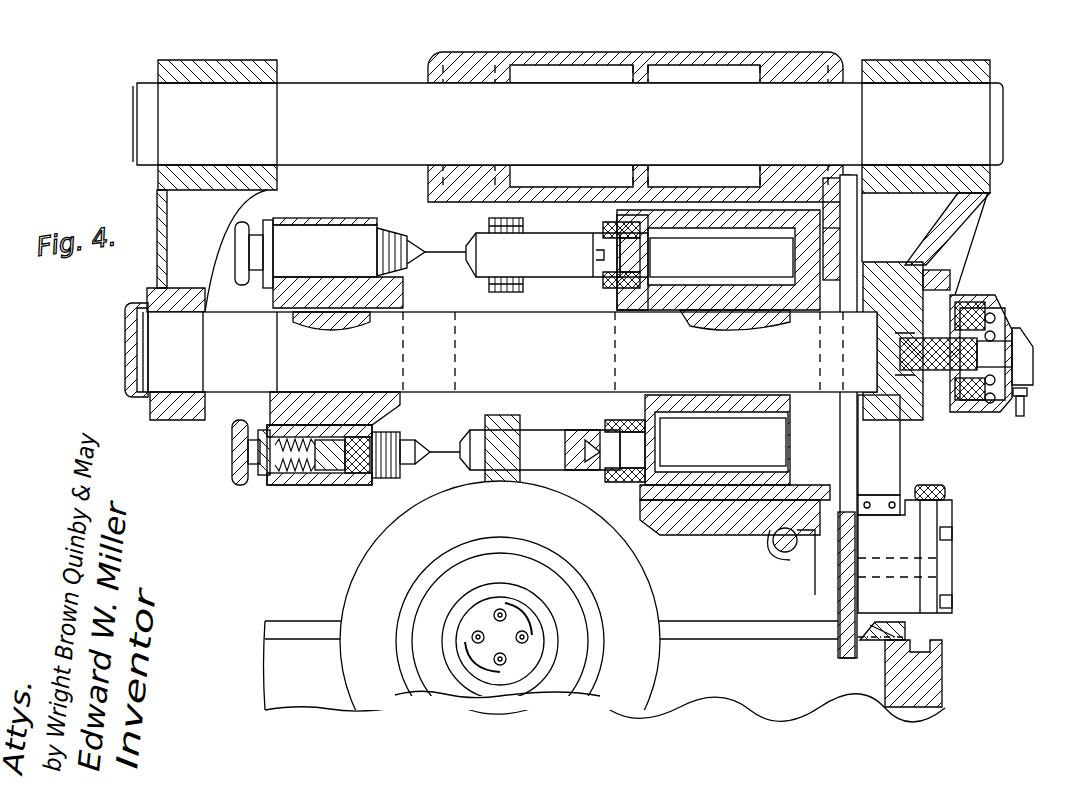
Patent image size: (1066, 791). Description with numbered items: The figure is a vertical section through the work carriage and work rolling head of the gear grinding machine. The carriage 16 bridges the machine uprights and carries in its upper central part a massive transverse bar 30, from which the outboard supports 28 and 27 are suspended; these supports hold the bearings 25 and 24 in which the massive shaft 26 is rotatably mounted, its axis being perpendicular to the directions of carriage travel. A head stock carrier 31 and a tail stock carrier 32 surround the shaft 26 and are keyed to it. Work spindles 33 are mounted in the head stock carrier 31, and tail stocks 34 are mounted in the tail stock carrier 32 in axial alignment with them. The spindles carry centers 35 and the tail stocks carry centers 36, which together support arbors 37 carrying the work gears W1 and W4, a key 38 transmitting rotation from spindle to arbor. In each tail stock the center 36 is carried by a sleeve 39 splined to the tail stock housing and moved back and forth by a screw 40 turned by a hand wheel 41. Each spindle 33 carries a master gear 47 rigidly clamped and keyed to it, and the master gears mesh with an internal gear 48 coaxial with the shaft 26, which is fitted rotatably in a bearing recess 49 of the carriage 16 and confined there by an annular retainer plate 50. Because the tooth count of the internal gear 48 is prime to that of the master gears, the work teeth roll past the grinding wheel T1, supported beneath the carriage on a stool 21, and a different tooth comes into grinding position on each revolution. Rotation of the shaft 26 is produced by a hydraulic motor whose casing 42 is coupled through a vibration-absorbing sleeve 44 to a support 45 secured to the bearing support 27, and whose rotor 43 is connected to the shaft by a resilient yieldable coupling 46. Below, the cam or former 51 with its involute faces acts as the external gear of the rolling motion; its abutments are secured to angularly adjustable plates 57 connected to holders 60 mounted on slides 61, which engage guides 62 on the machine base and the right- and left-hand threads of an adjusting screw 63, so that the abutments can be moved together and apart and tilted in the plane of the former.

The carriage 16 is at (677, 52).
The bar 30 is at (366, 88).
The outboard support 28 is at (157, 186).
The outboard support 27 is at (978, 212).
The support 45 is at (948, 280).
The bearing recess 49 is at (833, 178).
The annular retainer plate 50 is at (858, 178).
The internal gear 48 is at (852, 214).
The master gear 47 is at (866, 268).
The casing 42 is at (996, 298).
The vibration-absorbing sleeve 44 is at (968, 303).
The resilient yieldable coupling 46 is at (918, 346).
The rotor 43 is at (1016, 338).
The shaft 26 is at (478, 382).
The bearing 25 is at (172, 420).
The tail stock carrier 32 is at (415, 300).
The tail stock 34 is at (338, 228).
The hand wheel 41 is at (240, 250).
The screw 40 is at (270, 478).
The sleeve 39 is at (364, 482).
The center 36 is at (423, 245).
The gear W4 is at (488, 226).
The arbor 37 is at (548, 242).
The gear W1 is at (500, 486).
The center 35 is at (573, 442).
The key 38 is at (594, 258).
The head stock carrier 31 is at (630, 308).
The work spindle 33 is at (664, 392).
The adjusting screw 63 is at (780, 550).
The bearing 24 is at (874, 440).
The holder 60 is at (952, 560).
The angularly adjustable plate 57 is at (930, 590).
The stool 21 is at (696, 625).
The grinding wheel T1 is at (358, 580).
The cam or former 51 is at (845, 655).
The slide 61 is at (836, 582).
The guide 62 is at (830, 606).